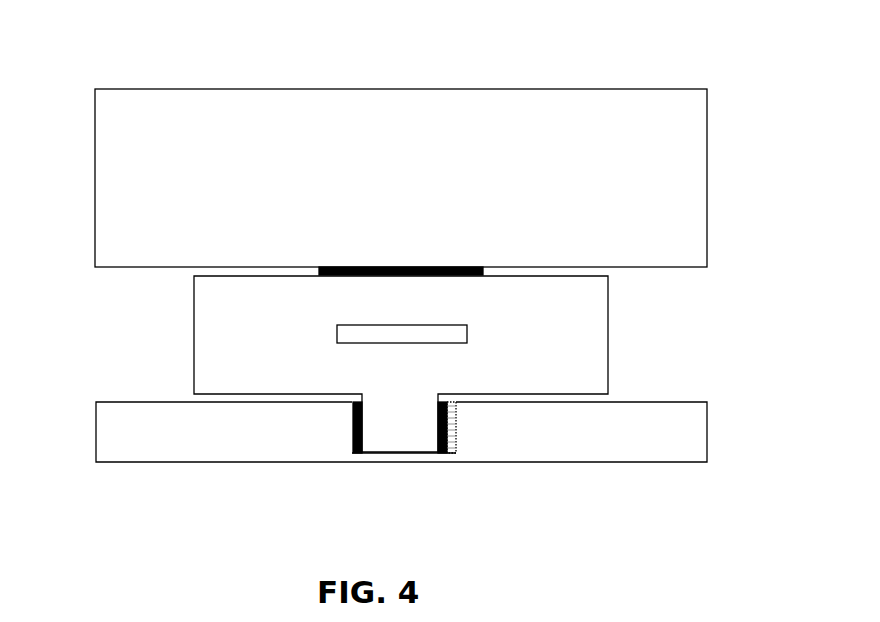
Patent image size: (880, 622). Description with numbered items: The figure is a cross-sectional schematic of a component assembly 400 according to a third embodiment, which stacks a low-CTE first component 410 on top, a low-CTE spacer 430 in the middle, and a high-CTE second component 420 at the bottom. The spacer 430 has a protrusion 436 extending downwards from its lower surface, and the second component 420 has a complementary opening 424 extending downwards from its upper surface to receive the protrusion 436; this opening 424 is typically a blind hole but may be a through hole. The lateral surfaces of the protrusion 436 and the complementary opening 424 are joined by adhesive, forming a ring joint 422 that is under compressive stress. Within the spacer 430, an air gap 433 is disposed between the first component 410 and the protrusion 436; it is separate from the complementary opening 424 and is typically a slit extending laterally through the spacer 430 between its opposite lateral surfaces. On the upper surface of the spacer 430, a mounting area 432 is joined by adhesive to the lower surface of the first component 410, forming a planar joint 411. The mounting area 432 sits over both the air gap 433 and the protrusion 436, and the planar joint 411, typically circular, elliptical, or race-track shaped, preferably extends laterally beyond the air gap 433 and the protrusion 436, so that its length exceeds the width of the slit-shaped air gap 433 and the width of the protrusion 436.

The component assembly 400 is at (112, 66).
The first component 410 is at (95, 180).
The planar joint 411 is at (483, 270).
The second component 420 is at (96, 432).
The ring joint 422 is at (356, 455).
The complementary opening 424 is at (456, 428).
The spacer 430 is at (194, 333).
The mounting area 432 is at (340, 279).
The air gap 433 is at (467, 334).
The protrusion 436 is at (403, 430).